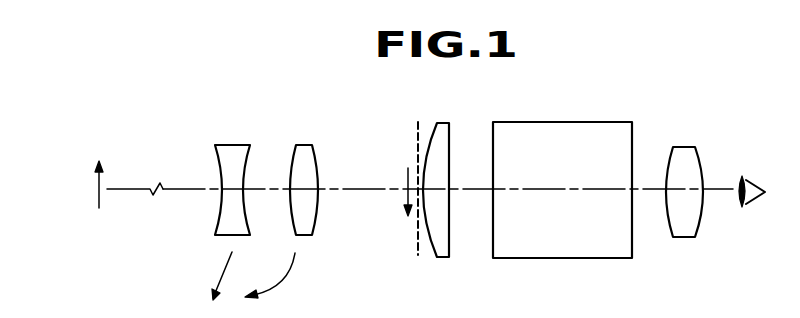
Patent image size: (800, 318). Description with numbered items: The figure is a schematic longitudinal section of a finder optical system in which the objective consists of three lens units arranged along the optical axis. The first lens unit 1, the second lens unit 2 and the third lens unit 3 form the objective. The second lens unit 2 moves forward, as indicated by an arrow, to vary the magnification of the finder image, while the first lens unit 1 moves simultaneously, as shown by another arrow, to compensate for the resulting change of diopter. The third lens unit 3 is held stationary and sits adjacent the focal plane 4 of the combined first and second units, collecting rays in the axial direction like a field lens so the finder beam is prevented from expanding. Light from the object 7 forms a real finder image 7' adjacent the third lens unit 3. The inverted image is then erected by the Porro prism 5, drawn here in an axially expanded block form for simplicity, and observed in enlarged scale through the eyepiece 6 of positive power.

The first lens unit 1 is at (235, 145).
The second lens unit 2 is at (309, 146).
The third lens unit 3 is at (451, 140).
The focal plane 4 is at (416, 140).
The Porro prism 5 is at (634, 138).
The eyepiece 6 is at (695, 147).
The object 7 is at (112, 223).
The real finder image 7' is at (390, 227).